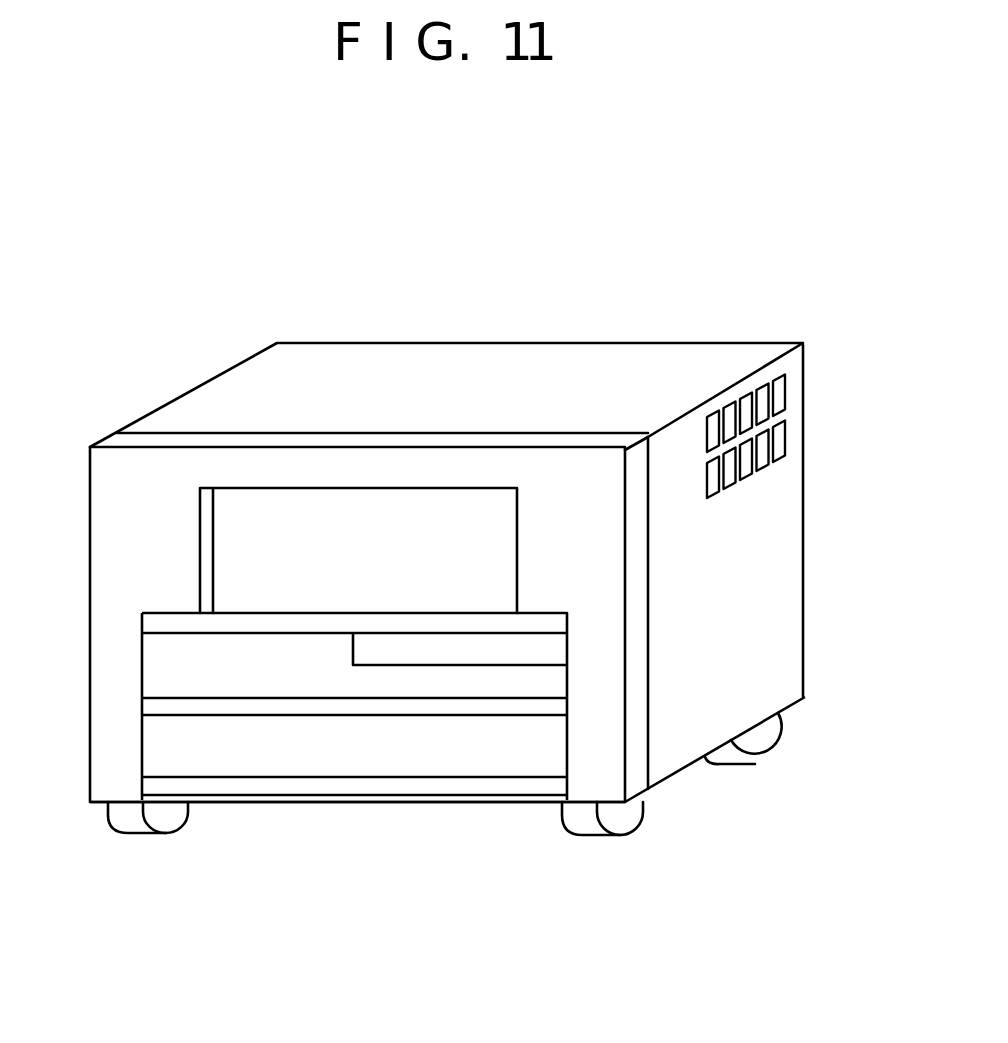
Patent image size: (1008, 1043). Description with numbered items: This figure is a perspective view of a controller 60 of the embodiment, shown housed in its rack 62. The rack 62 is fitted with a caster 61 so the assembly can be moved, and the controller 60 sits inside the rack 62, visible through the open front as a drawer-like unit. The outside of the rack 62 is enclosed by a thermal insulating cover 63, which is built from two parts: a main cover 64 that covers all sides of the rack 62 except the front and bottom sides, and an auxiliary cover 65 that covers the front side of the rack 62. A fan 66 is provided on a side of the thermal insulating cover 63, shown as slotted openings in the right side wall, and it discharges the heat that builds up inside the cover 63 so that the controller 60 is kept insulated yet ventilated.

The controller 60 is at (348, 757).
The caster 61 is at (142, 834).
The rack 62 is at (497, 801).
The thermal insulating cover 63 is at (48, 283).
The main cover 64 is at (212, 401).
The auxiliary cover 65 is at (88, 475).
The fan 66 is at (790, 435).